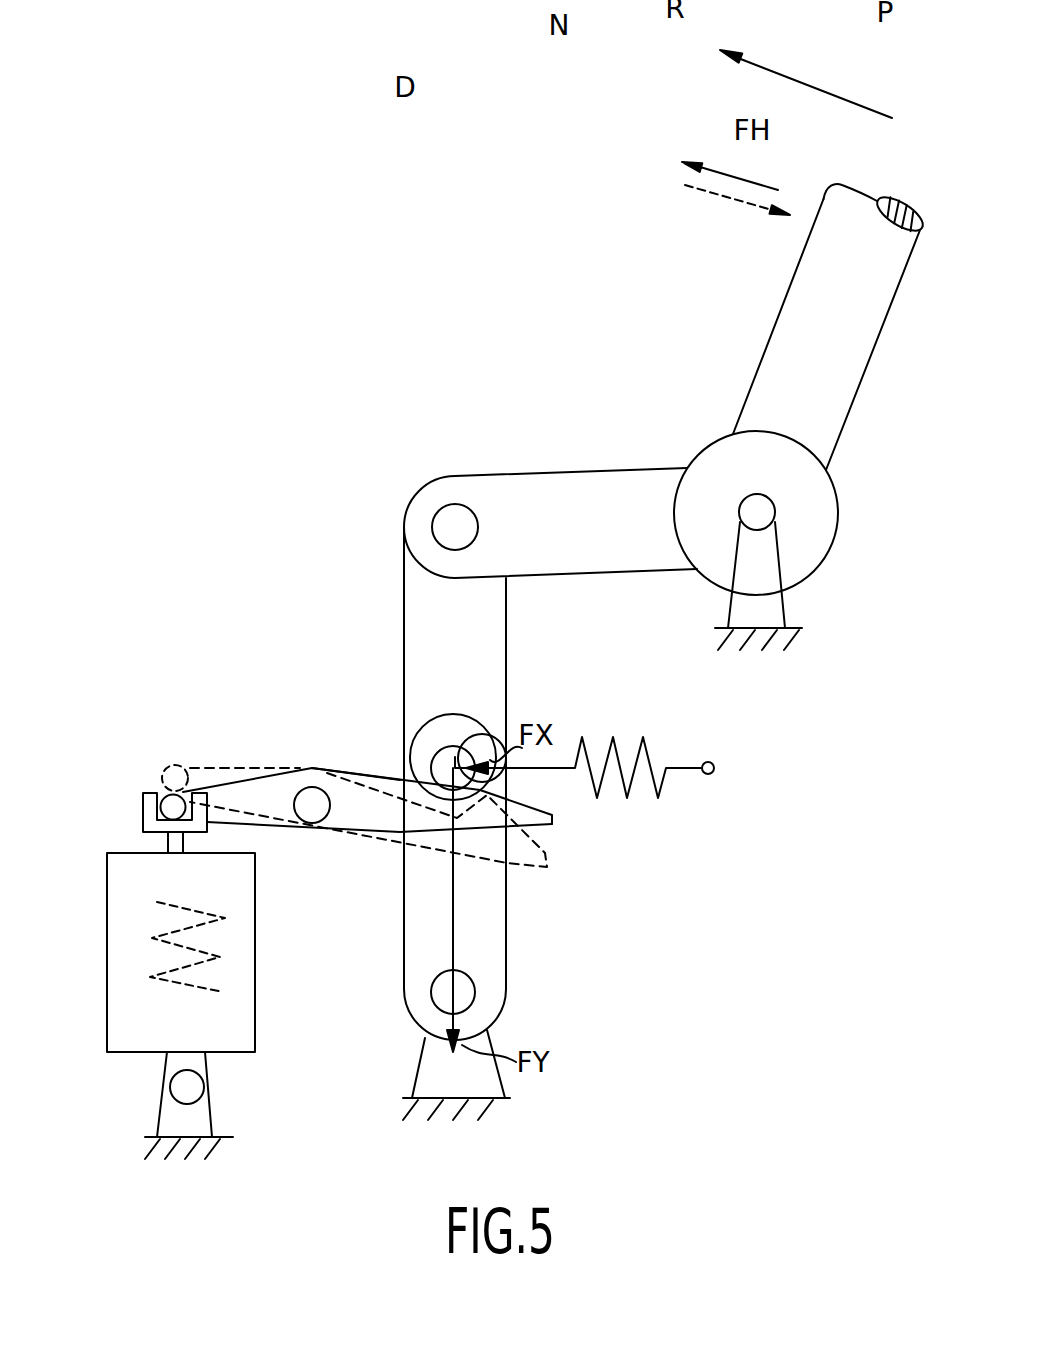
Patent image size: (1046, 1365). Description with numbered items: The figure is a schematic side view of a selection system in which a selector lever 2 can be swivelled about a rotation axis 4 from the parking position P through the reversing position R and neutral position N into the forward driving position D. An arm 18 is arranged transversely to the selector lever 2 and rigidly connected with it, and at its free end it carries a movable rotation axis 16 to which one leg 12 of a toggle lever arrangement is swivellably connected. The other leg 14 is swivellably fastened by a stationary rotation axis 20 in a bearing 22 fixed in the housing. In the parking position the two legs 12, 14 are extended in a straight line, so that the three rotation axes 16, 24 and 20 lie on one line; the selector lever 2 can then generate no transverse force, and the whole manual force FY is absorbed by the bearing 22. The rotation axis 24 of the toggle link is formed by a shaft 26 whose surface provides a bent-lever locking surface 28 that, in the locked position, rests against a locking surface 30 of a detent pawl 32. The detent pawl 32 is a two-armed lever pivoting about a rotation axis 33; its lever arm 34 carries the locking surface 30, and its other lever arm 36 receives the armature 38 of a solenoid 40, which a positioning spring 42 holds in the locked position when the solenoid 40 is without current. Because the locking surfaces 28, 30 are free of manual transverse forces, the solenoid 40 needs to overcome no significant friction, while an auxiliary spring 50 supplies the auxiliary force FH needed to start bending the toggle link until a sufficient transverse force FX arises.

The selector lever 2 is at (790, 322).
The rotation axis 4 is at (762, 510).
The leg 12 is at (403, 622).
The leg 14 is at (403, 885).
The movable rotation axis 16 is at (447, 520).
The arm 18 is at (583, 470).
The stationary rotation axis 20 is at (442, 985).
The bearing 22 is at (417, 1063).
The rotation axis 24 is at (412, 742).
The shaft 26 is at (500, 735).
The bent-lever locking surface 28 is at (460, 757).
The locking surface 30 is at (487, 770).
The detent pawl 32 is at (277, 787).
The rotation axis 33 is at (311, 815).
The lever arm 34 is at (360, 777).
The lever arm 36 is at (212, 783).
The armature 38 is at (143, 822).
The solenoid 40 is at (255, 940).
The positioning spring 42 is at (225, 985).
The auxiliary spring 50 is at (660, 790).